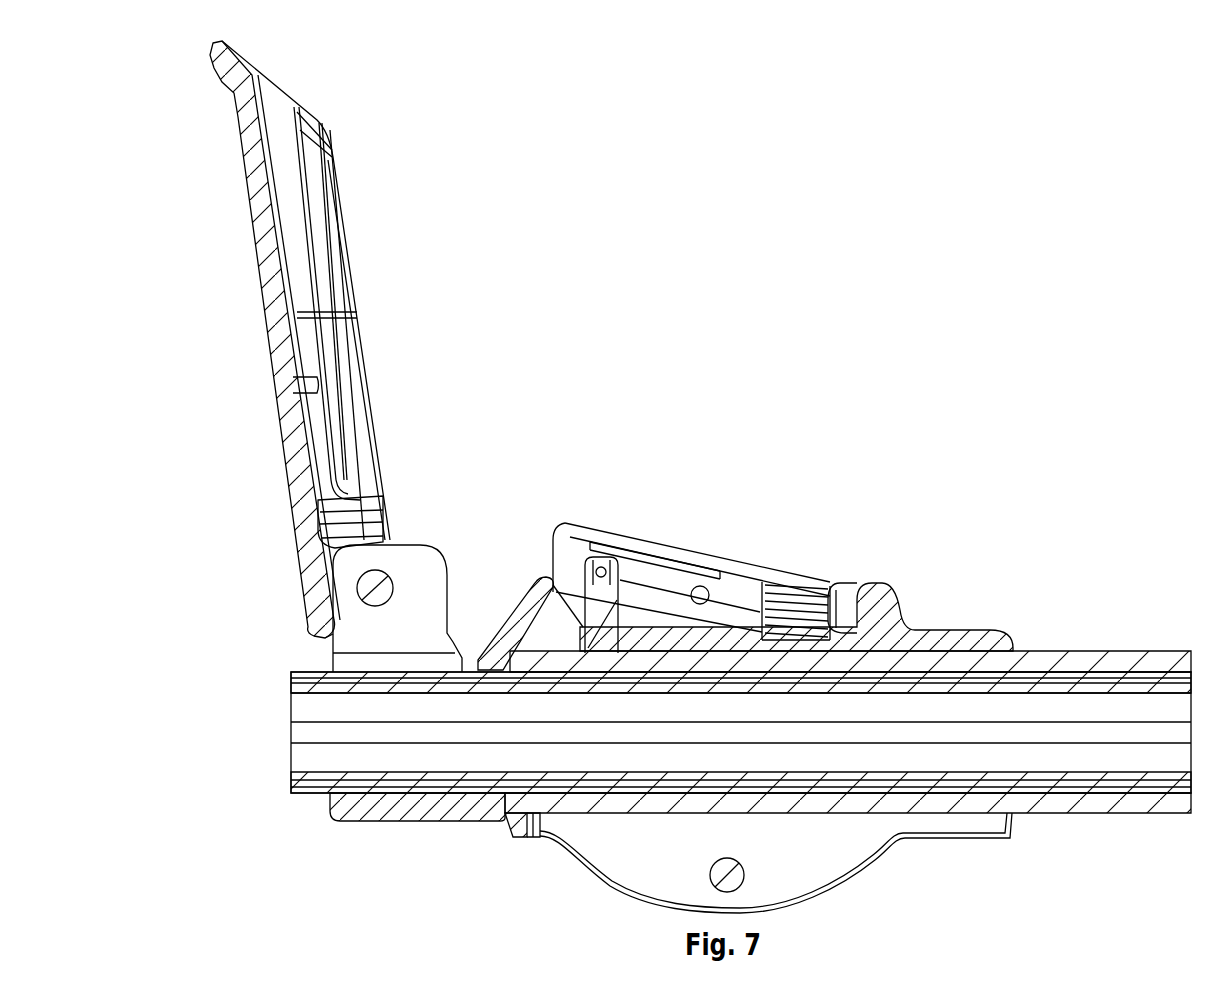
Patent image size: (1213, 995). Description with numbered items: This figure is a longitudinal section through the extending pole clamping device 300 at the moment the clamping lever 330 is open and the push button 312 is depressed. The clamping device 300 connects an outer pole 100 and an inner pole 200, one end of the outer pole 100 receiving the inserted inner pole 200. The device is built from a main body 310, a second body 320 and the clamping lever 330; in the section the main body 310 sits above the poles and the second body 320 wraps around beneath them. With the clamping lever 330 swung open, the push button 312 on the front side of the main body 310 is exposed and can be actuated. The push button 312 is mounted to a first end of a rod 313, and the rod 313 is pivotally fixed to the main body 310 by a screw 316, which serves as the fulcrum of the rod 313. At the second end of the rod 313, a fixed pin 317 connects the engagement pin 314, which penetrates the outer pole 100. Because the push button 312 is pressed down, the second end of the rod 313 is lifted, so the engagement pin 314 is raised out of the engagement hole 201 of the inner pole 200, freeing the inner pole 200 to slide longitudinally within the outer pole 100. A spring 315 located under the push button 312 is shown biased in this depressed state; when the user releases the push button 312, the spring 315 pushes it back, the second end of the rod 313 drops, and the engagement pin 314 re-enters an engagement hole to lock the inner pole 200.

The outer pole 100 is at (1037, 658).
The inner pole 200 is at (1100, 678).
The engagement hole 201 is at (598, 678).
The extending pole clamping device 300 is at (758, 316).
The main body 310 is at (850, 834).
The push button 312 is at (800, 578).
The rod 313 is at (677, 588).
The engagement pin 314 is at (593, 620).
The spring 315 is at (827, 594).
The screw 316 is at (700, 586).
The fixed pin 317 is at (600, 566).
The second body 320 is at (433, 815).
The clamping lever 330 is at (346, 211).